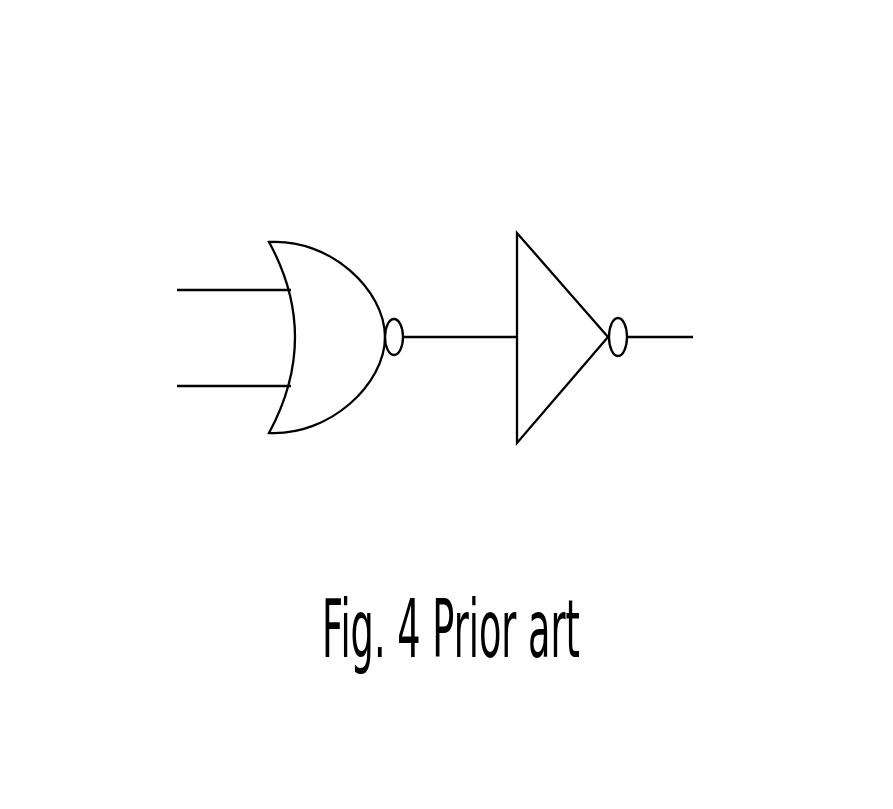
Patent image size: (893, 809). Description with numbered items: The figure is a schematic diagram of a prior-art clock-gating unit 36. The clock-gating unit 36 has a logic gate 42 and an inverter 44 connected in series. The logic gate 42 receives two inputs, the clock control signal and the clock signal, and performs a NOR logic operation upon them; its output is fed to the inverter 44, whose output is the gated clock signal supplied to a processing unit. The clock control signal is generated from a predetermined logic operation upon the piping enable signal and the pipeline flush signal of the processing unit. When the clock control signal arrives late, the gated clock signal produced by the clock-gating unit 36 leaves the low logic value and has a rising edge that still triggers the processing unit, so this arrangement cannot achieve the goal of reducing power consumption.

The clock-gating unit 36 is at (137, 82).
The logic gate 42 is at (297, 240).
The inverter 44 is at (563, 283).